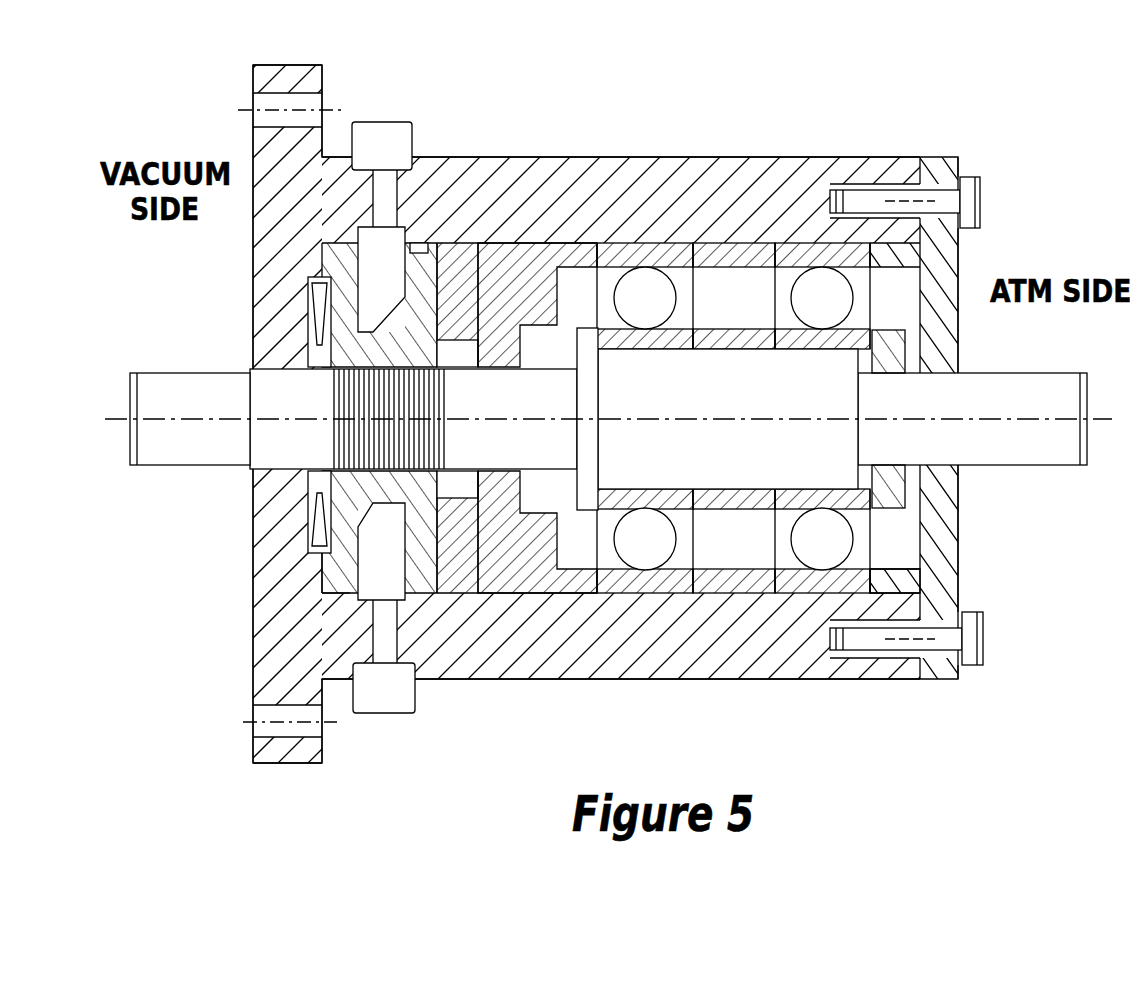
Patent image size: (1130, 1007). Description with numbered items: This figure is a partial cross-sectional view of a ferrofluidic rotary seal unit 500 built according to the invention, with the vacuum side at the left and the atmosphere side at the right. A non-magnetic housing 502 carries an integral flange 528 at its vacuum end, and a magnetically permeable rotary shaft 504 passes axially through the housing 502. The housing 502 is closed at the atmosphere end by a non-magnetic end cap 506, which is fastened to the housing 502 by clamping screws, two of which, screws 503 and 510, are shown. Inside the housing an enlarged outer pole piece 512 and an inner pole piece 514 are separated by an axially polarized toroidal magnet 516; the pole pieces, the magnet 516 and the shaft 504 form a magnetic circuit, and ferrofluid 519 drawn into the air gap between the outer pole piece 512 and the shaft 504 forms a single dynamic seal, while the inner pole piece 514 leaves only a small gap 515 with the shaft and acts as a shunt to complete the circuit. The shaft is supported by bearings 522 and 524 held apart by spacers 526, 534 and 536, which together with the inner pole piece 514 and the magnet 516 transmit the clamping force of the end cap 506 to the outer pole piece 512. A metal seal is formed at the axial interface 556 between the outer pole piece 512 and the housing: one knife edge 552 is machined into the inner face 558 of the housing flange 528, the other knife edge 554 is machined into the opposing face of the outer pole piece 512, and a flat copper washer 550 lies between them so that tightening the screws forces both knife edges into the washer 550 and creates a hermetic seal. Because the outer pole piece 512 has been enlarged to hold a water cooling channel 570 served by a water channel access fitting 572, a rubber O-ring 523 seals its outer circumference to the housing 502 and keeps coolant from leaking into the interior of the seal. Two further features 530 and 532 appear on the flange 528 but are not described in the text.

The ferrofluidic seal unit 500 is at (910, 143).
The housing 502 is at (693, 650).
The clamping screw 503 is at (980, 186).
The rotary shaft 504 is at (1026, 450).
The end cap 506 is at (947, 517).
The clamping screw 510 is at (979, 624).
The outer pole piece 512 is at (320, 583).
The inner pole piece 514 is at (537, 243).
The gap 515 is at (505, 370).
The magnet 516 is at (467, 570).
The ferrofluid 519 is at (450, 399).
The bearing 522 is at (667, 262).
The rubber O-ring 523 is at (418, 247).
The bearing 524 is at (808, 262).
The spacer 526 is at (580, 582).
The integral housing flange 528 is at (258, 72).
The flange bolt hole 530 is at (262, 118).
The flange bolt hole 532 is at (262, 731).
The spacer 534 is at (760, 578).
The spacer 536 is at (895, 587).
The metal flat washer 550 is at (306, 322).
The knife edge 552 is at (306, 522).
The knife edge 554 is at (351, 582).
The axial interface 556 is at (320, 562).
The inner face of the housing flange 558 is at (313, 263).
The water cooling channel 570 is at (401, 582).
The water channel access fitting 572 is at (393, 133).